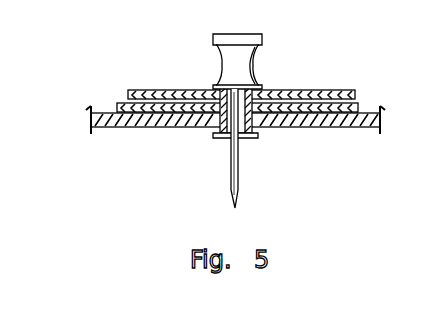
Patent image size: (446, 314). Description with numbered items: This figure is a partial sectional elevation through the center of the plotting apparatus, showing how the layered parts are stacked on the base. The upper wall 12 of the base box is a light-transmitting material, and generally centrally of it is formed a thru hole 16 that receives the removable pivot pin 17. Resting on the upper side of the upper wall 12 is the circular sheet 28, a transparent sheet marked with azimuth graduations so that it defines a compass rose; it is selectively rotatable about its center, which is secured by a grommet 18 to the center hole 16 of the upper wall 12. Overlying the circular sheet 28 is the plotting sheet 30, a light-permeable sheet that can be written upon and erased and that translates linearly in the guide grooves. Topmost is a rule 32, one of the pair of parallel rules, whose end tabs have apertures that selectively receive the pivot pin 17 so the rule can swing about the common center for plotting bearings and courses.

The upper wall 12 is at (93, 104).
The hole 16 is at (249, 135).
The pivot pin 17 is at (243, 166).
The grommet 18 is at (213, 135).
The circular sheet 28 is at (379, 110).
The plotting sheet 30 is at (302, 102).
The rule 32 is at (272, 90).